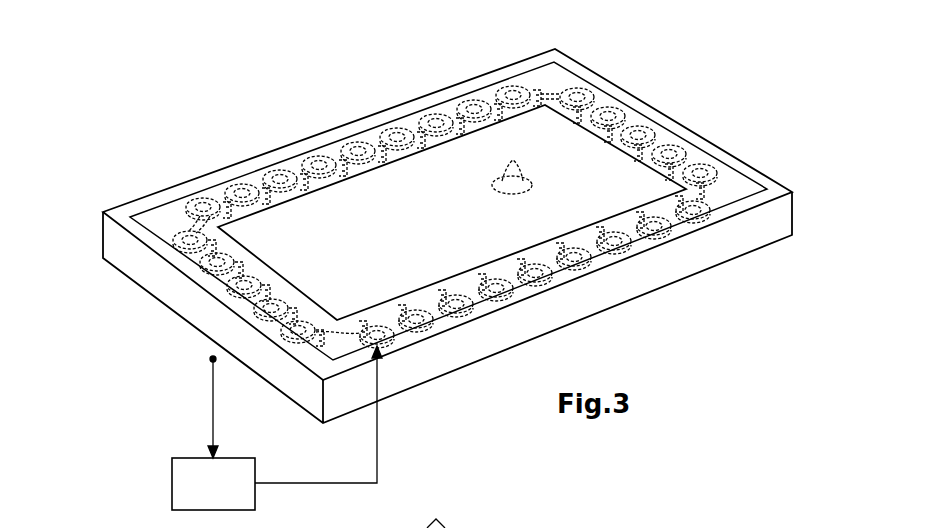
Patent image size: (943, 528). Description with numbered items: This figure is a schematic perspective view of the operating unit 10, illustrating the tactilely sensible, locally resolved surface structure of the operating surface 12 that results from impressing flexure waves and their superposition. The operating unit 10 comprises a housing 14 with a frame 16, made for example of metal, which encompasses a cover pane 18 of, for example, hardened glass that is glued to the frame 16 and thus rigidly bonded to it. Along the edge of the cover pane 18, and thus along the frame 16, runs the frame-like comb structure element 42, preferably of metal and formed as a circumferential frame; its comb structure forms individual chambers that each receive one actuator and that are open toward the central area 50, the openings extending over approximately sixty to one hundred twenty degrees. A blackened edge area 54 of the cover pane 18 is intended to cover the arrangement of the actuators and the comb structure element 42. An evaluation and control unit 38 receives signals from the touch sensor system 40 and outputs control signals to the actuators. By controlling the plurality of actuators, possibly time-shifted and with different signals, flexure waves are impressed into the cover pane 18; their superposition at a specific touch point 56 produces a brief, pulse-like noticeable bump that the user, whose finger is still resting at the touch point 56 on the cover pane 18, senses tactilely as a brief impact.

The operating unit 10 is at (217, 134).
The operating surface 12 is at (406, 200).
The housing 14 is at (154, 323).
The frame 16 is at (753, 230).
The cover pane 18 is at (557, 182).
The comb structure element 42 is at (723, 188).
The central area 50 is at (240, 178).
The blackened edge area 54 is at (613, 253).
The touch point 56 is at (524, 180).
The evaluation and control unit 38 is at (187, 477).
The touch sensor system 40 is at (207, 360).